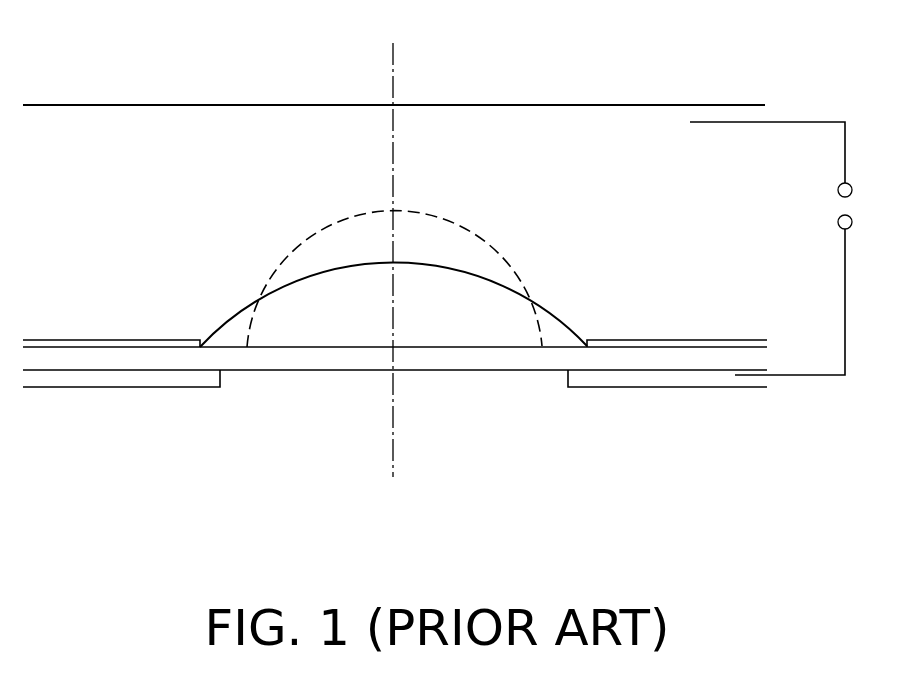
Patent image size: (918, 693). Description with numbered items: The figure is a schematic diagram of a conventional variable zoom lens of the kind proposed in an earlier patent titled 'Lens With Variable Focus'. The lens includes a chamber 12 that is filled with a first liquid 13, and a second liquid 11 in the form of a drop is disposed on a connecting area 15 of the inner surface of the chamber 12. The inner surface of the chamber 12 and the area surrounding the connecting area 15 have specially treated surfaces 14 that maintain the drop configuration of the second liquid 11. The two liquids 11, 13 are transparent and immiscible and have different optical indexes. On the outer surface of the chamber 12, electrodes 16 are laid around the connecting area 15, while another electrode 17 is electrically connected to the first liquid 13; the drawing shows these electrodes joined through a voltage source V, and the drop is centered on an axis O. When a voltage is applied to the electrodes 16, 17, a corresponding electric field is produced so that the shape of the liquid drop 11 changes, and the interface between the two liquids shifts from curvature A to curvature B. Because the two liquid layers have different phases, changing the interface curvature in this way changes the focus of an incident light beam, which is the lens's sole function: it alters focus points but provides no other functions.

The second liquid 11 is at (393, 260).
The chamber 12 is at (717, 357).
The first liquid 13 is at (582, 135).
The specially treated surfaces 14 is at (90, 340).
The connecting area 15 is at (305, 347).
The electrodes 16 is at (127, 388).
The electrode 17 is at (800, 120).
The curvature A is at (557, 313).
The curvature B is at (448, 222).
The optical axis O is at (393, 425).
The voltage source V is at (808, 279).